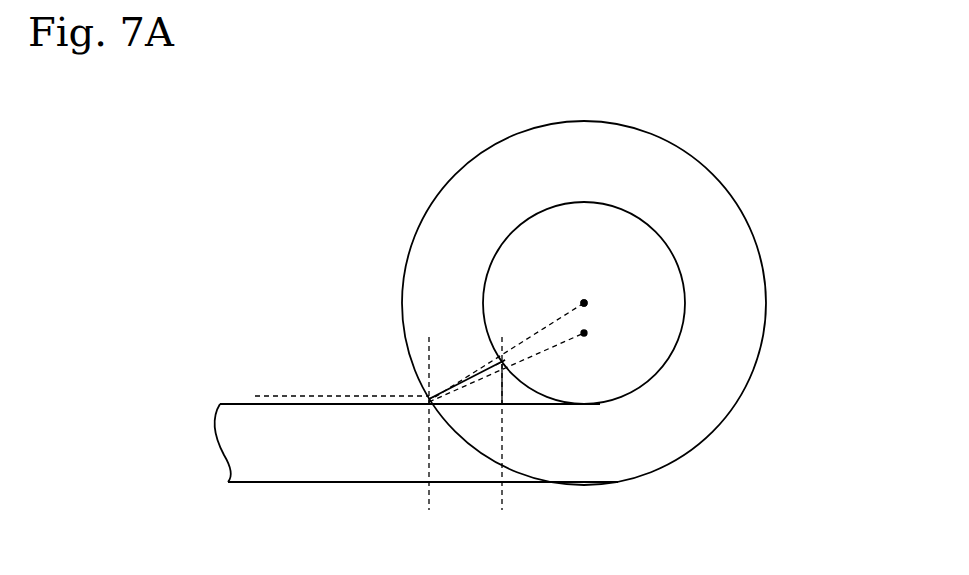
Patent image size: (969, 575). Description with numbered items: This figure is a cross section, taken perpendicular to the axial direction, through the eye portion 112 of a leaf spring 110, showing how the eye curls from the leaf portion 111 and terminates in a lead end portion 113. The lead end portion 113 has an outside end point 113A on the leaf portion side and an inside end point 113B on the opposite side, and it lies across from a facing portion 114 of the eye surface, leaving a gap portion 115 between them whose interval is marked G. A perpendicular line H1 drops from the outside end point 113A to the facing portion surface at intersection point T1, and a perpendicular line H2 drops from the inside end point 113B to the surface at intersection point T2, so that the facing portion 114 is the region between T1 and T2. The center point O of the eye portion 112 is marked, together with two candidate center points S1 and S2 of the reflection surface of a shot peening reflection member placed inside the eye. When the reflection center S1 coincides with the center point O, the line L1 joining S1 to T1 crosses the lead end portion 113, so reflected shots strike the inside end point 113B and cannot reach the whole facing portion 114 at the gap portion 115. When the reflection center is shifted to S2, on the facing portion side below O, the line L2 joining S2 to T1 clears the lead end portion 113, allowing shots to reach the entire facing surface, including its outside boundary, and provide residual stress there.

The leaf spring 110 is at (617, 299).
The leaf portion 111 is at (307, 467).
The eye portion 112 is at (748, 268).
The lead end portion 113 is at (500, 362).
The outside end point 113A is at (429, 400).
The inside end point 113B is at (505, 360).
The facing portion 114 is at (470, 404).
The gap portion 115 is at (470, 395).
The interval of the gap portion G is at (267, 430).
The perpendicular line H1 is at (426, 352).
The perpendicular line H2 is at (504, 425).
The intersection point T1 is at (430, 404).
The intersection point T2 is at (507, 403).
The line L1 is at (547, 322).
The line L2 is at (553, 348).
The center point of reflection surface S1 is at (589, 300).
The center point of reflection surface S2 is at (587, 335).
The center point of the eye portion O is at (579, 292).